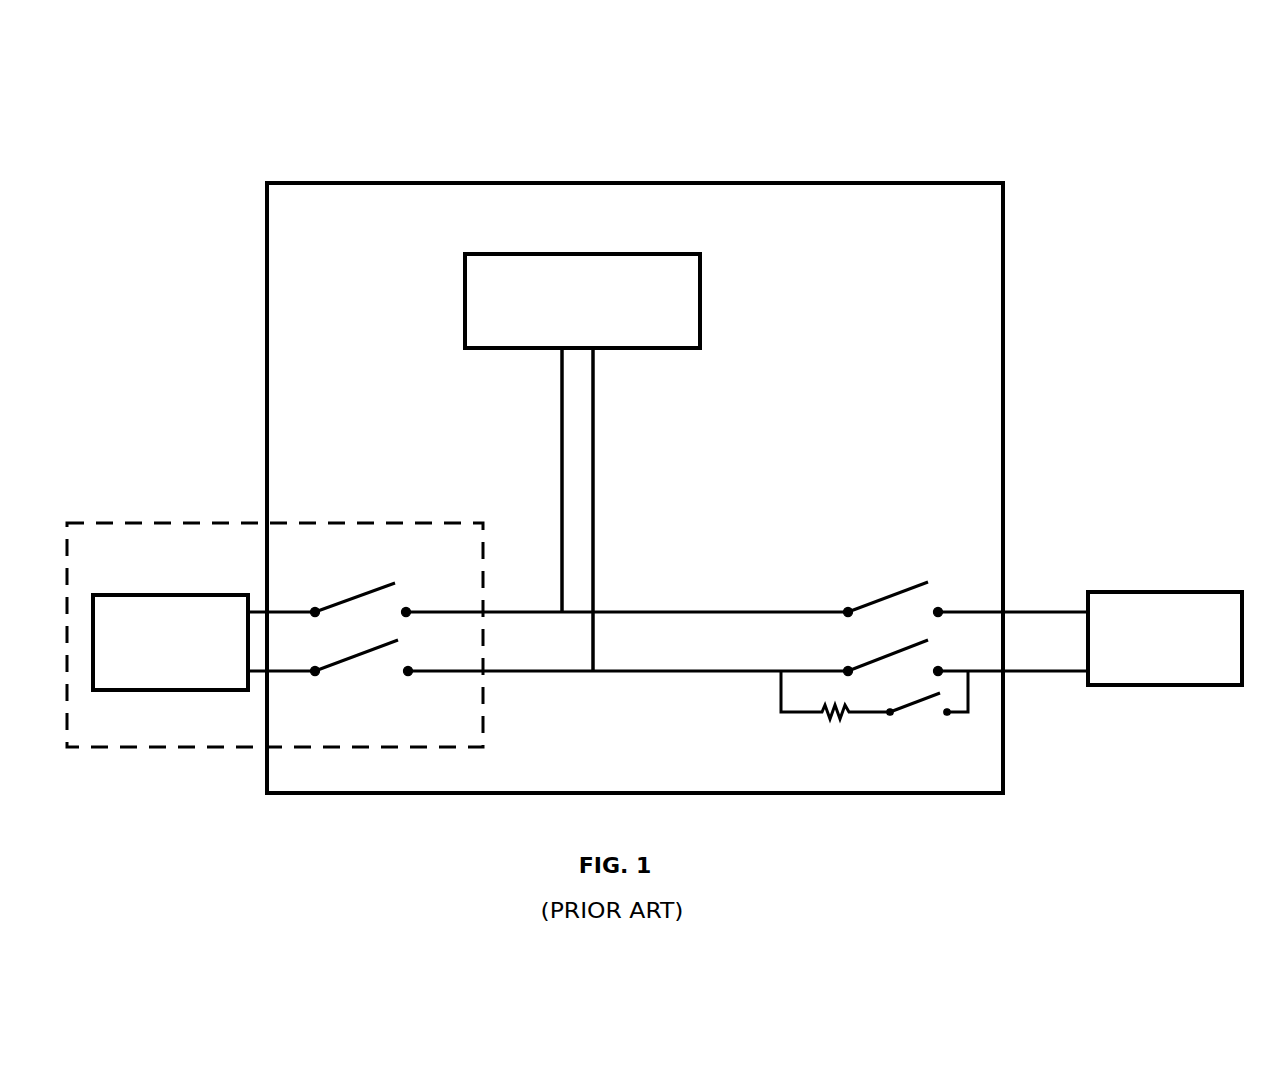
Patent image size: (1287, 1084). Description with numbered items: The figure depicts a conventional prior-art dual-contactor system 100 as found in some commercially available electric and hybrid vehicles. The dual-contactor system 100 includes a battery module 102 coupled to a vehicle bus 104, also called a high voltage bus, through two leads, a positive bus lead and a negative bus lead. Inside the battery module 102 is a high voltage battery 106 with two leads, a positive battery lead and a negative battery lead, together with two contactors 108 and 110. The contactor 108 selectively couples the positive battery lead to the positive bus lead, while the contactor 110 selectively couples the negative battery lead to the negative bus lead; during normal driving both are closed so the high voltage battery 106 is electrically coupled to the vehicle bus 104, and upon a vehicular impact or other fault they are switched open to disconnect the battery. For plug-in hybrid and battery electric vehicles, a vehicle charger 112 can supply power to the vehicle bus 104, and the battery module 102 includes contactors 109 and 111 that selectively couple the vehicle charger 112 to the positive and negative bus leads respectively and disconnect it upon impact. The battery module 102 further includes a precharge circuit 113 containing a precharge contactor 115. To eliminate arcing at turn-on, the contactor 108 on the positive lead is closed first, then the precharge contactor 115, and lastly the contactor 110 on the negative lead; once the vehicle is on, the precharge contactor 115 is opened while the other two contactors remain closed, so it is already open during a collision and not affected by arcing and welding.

The dual-contactor system 100 is at (276, 154).
The battery module 102 is at (537, 237).
The vehicle bus 104 is at (1205, 592).
The high voltage battery 106 is at (700, 302).
The contactor 108 is at (872, 590).
The contactor 109 is at (355, 592).
The contactor 110 is at (885, 647).
The contactor 111 is at (340, 670).
The vehicle charger 112 is at (150, 595).
The precharge circuit 113 is at (830, 707).
The precharge contactor 115 is at (893, 703).